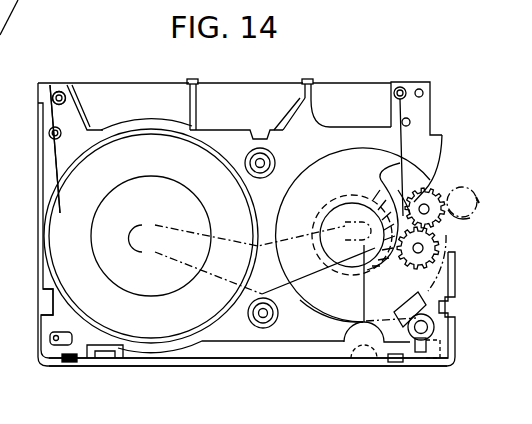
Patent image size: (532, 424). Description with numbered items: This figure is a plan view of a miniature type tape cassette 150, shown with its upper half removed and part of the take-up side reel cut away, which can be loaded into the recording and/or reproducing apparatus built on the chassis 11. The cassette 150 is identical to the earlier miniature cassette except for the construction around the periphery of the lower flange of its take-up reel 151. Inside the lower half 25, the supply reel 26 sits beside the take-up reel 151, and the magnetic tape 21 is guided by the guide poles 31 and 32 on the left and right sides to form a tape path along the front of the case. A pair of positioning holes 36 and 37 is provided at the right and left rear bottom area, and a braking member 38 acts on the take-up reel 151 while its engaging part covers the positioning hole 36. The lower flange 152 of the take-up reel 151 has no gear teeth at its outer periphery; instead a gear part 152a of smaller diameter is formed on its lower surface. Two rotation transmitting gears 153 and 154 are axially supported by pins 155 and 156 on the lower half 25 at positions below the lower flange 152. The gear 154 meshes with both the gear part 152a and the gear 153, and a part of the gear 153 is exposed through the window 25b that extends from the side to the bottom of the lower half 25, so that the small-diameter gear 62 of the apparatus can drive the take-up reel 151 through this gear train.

The chassis 11 is at (11, 36).
The miniature type tape cassette 150 is at (145, 64).
The guide pole 31 is at (57, 90).
The magnetic tape 21 is at (55, 162).
The supply reel 26 is at (55, 275).
The positioning hole 37 is at (50, 340).
The lower half 25 is at (248, 361).
The guide pole 32 is at (402, 86).
The window 25b is at (434, 152).
The lower flange 152 is at (311, 167).
The take-up reel 151 is at (325, 322).
The gear part 152a is at (380, 196).
The pin 155 is at (427, 196).
The rotation transmitting gear 154 is at (441, 240).
The pin 156 is at (413, 255).
The small-diameter gear 62 is at (470, 192).
The rotation transmitting gear 153 is at (455, 215).
The braking member 38 is at (417, 352).
The positioning hole 36 is at (432, 353).